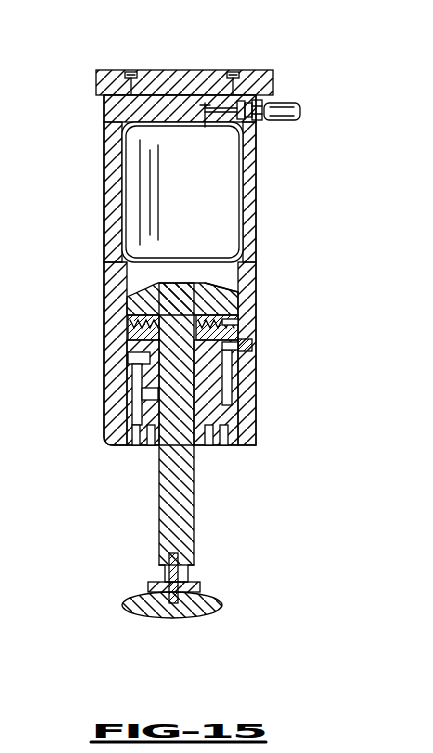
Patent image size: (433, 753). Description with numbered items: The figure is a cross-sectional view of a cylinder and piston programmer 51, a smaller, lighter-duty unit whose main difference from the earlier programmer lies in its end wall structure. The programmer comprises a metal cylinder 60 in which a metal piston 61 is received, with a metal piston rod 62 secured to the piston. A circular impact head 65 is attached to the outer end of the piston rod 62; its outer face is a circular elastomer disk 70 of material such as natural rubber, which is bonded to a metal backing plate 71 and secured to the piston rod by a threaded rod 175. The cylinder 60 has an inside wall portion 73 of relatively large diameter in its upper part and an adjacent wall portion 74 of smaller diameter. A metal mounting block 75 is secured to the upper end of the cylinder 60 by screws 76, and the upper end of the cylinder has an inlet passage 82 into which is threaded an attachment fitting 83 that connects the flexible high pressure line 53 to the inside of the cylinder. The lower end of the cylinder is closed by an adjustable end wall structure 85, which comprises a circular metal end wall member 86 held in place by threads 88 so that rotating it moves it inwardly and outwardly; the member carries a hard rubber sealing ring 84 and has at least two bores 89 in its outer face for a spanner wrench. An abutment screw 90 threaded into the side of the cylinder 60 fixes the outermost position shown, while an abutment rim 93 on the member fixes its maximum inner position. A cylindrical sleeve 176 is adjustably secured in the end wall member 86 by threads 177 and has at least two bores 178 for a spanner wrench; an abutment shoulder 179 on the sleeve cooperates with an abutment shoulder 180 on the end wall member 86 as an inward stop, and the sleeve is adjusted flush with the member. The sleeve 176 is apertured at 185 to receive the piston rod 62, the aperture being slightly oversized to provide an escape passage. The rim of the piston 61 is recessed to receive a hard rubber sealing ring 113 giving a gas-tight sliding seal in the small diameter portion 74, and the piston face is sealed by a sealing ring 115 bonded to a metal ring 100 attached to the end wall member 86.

The mounting block 75 is at (96, 82).
The screws 76 is at (131, 72).
The cylinder 60 is at (256, 216).
The inside wall portion of relatively large diameter 73 is at (241, 183).
The inlet passage 82 is at (205, 116).
The attachment fitting 83 is at (259, 120).
The flexible high pressure line 53 is at (290, 120).
The piston 61 is at (178, 282).
The wall portion of smaller diameter 74 is at (226, 284).
The piston rod 62 is at (196, 527).
The sealing ring 84 is at (128, 328).
The sealing ring 113 is at (245, 292).
The sealing ring 115 is at (240, 306).
The metal ring 100 is at (236, 322).
The aperture 185 is at (160, 372).
The abutment shoulder 180 is at (150, 404).
The abutment shoulder 179 is at (140, 422).
The threads 177 is at (108, 443).
The adjustable end wall structure 85 is at (118, 453).
The bores 178 is at (145, 447).
The cylindrical sleeve 176 is at (160, 447).
The threads 88 is at (228, 398).
The abutment rim 93 is at (230, 396).
The abutment screw 90 is at (250, 346).
The bores 89 is at (220, 447).
The end wall member 86 is at (212, 447).
The threaded rod 175 is at (180, 558).
The metal backing plate 71 is at (150, 584).
The elastomer disk 70 is at (202, 614).
The impact head 65 is at (138, 622).
The cylinder and piston programmer 51 is at (80, 178).